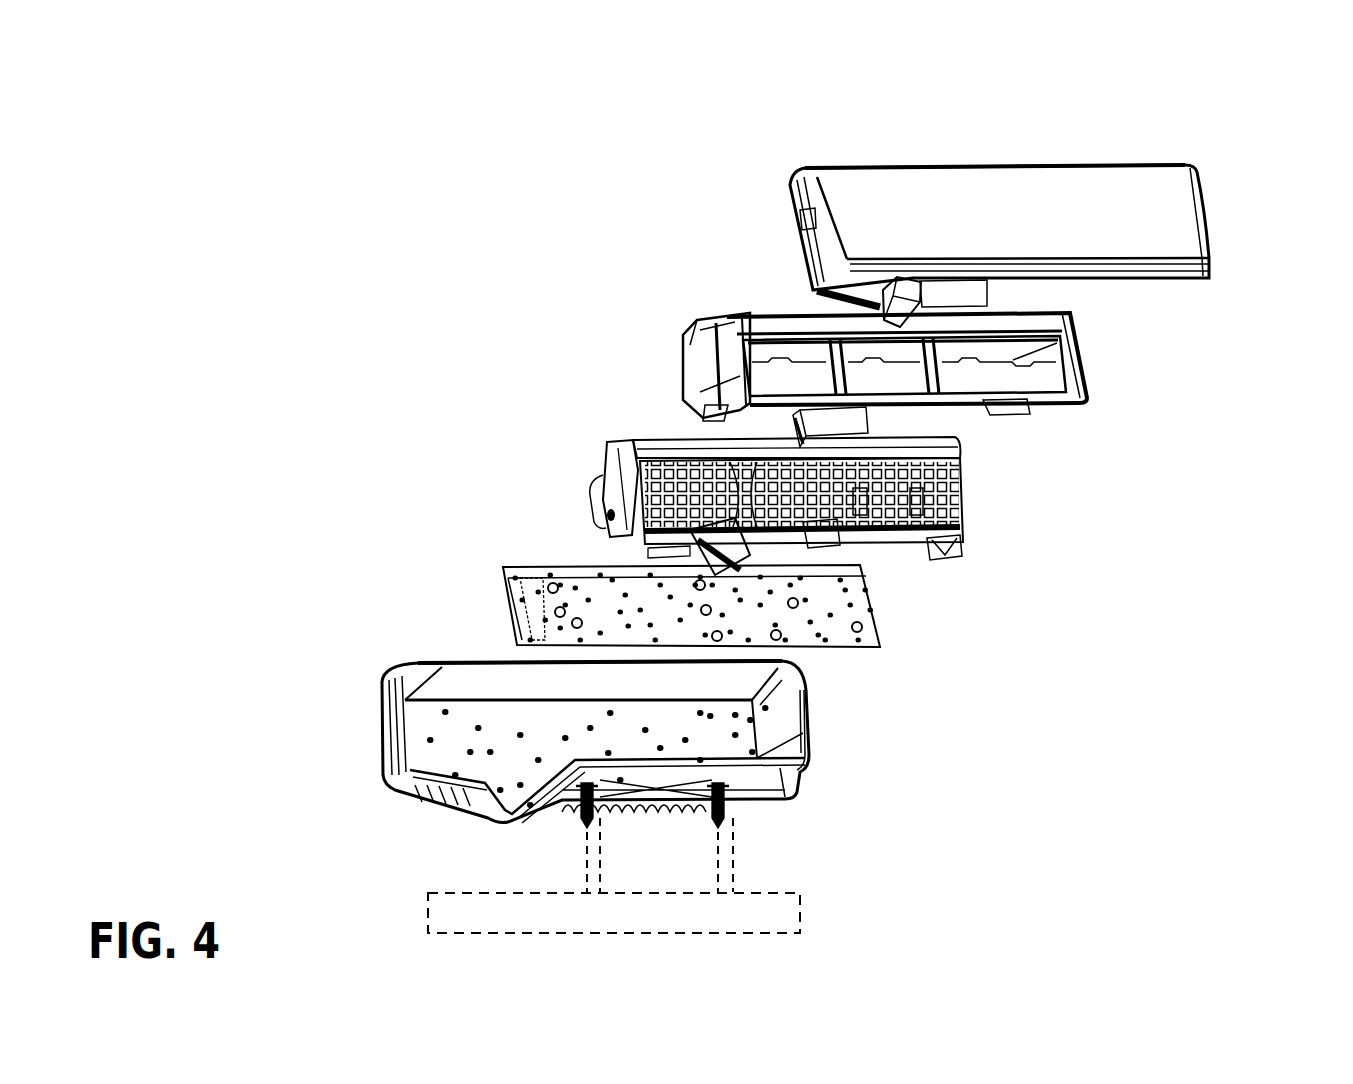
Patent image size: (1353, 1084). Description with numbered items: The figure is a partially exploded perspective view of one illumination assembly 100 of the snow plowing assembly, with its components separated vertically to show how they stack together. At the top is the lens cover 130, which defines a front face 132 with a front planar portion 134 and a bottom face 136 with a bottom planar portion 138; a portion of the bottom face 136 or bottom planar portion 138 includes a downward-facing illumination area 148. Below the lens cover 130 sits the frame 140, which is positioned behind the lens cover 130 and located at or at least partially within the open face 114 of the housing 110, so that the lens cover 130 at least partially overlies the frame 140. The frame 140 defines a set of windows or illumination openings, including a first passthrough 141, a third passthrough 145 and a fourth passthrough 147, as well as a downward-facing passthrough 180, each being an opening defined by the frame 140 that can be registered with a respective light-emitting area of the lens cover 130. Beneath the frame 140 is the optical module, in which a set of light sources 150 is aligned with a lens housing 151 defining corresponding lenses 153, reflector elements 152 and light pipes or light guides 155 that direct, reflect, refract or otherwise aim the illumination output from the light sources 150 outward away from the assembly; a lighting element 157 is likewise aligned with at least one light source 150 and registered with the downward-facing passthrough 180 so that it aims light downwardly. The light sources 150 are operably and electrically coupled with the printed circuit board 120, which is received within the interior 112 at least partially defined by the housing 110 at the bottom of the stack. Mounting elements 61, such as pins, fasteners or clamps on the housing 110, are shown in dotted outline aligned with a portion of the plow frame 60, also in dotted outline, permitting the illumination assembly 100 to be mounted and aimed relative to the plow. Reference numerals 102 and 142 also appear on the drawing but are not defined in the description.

The illumination assembly 100 is at (268, 221).
The battery pack 102 is at (558, 133).
The housing 110 is at (395, 770).
The interior 112 is at (662, 718).
The open face 114 is at (418, 656).
The printed circuit board 120 is at (525, 620).
The lens cover 130 is at (1205, 182).
The front face 132 is at (884, 190).
The front planar portion 134 is at (1050, 210).
The bottom face 136 is at (812, 312).
The bottom planar portion 138 is at (931, 307).
The frame 140 is at (710, 322).
The first passthrough 141 is at (718, 342).
The frame dividers 142 is at (798, 343).
The third passthrough 145 is at (1023, 398).
The fourth passthrough 147 is at (1016, 372).
The downward-facing illumination area 148 is at (945, 308).
The light source 150 is at (697, 608).
The lens housing 151 is at (614, 441).
The reflector elements 152 is at (963, 522).
The lens 153 is at (937, 537).
The light pipes or light guides 155 is at (640, 445).
The lighting element 157 is at (740, 557).
The downward-facing passthrough 180 is at (870, 428).
The plow frame 60 is at (813, 908).
The mounting elements 61 is at (752, 824).